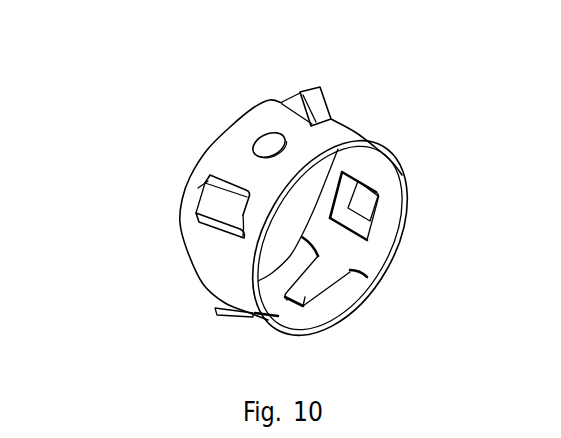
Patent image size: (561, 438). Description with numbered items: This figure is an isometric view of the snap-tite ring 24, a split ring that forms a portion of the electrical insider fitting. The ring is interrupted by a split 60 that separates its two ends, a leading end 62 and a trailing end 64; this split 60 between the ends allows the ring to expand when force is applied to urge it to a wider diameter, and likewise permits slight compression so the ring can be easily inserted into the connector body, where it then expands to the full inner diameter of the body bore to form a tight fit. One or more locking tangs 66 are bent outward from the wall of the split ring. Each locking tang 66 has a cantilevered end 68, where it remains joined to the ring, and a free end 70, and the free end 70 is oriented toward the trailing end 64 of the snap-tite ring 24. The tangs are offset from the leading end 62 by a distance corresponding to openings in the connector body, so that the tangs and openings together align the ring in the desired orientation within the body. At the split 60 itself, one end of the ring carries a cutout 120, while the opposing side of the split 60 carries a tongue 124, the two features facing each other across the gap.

The snap-tite ring 24 is at (116, 80).
The split 60 is at (345, 272).
The leading end 62 is at (404, 225).
The trailing end 64 is at (232, 122).
The locking tangs 66 is at (322, 103).
The cantilevered end 68 is at (243, 225).
The free end 70 is at (198, 188).
The cutout 120 is at (289, 297).
The tongue 124 is at (305, 297).